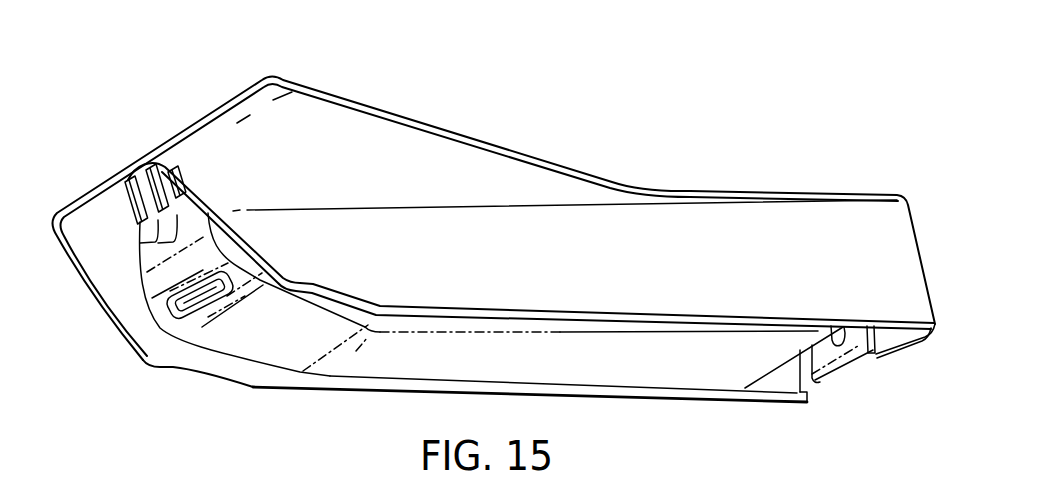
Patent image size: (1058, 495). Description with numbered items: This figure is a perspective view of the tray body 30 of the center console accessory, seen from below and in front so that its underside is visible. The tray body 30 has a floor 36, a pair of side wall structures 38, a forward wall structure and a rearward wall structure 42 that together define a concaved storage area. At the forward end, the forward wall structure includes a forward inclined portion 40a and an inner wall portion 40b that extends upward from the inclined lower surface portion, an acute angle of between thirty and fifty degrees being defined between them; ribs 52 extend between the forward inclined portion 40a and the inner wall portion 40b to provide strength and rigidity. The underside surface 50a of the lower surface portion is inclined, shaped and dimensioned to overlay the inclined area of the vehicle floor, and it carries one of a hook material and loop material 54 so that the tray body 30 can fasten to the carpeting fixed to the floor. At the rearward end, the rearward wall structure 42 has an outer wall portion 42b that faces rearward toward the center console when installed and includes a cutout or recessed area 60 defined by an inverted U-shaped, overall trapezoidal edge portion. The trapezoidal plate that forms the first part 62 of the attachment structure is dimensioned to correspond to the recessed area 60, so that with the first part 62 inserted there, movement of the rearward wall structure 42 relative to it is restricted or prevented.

The tray body 30 is at (596, 108).
The floor 36 is at (617, 362).
The side wall structures 38 is at (762, 240).
The forward inclined portion 40a is at (130, 164).
The inner wall portion 40b is at (192, 217).
The rearward wall structure 42 is at (884, 338).
The outer wall portion 42b is at (806, 372).
The underside surface 50a is at (208, 323).
The ribs 52 is at (141, 224).
The hook material and loop material 54 is at (180, 315).
The recessed area 60 is at (805, 360).
The first part 62 is at (850, 343).